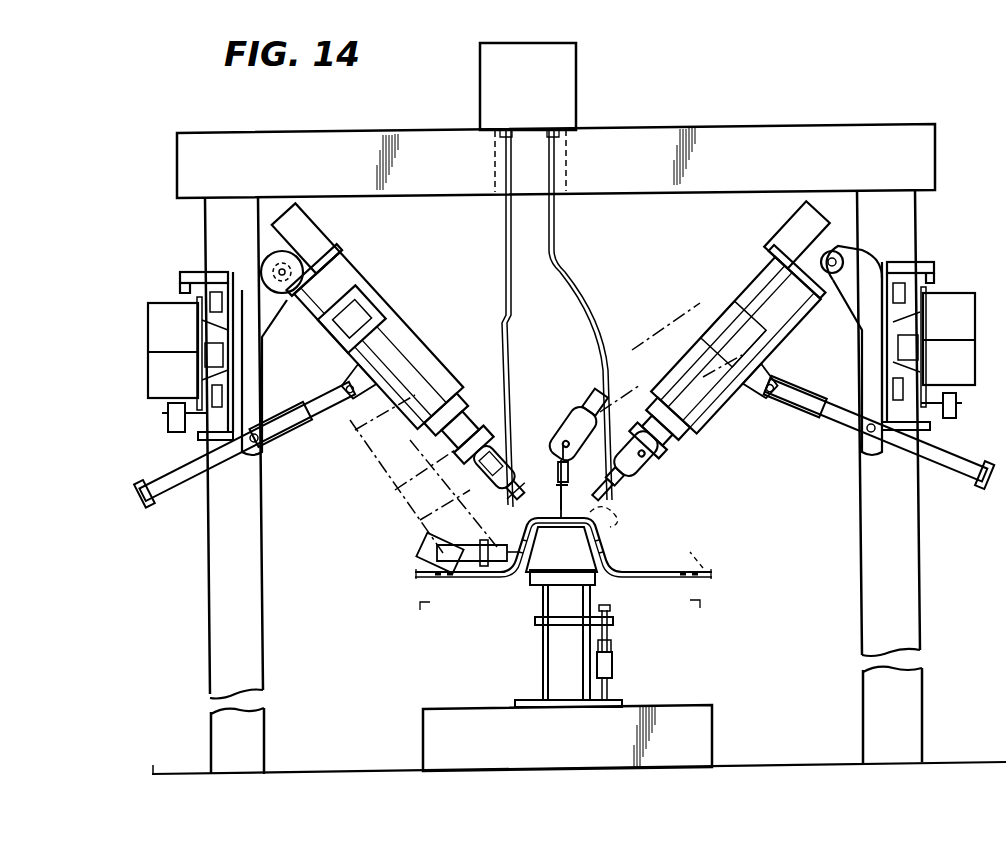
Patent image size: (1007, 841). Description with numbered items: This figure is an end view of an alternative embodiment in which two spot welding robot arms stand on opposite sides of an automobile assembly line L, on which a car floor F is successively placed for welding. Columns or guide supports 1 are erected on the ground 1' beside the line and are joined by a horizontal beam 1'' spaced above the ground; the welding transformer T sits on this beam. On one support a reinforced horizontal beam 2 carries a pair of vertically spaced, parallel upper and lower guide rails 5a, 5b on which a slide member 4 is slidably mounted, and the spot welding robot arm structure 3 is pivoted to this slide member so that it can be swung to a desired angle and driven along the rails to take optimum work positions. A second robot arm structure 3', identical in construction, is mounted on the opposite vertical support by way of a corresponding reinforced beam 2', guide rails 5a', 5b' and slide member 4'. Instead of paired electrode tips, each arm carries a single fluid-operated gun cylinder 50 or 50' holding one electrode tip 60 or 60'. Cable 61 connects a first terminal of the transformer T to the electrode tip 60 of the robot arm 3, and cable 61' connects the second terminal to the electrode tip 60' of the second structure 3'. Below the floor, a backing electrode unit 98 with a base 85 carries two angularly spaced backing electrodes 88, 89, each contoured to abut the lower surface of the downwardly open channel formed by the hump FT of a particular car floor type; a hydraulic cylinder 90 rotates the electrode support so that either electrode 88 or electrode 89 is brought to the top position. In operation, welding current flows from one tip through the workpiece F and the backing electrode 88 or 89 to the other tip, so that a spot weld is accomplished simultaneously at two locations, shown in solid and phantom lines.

The transformer T is at (573, 56).
The horizontal beam 1'' is at (556, 145).
The column or guide support 1 is at (565, 482).
The ground 1' is at (579, 743).
The automobile assembly line L is at (575, 212).
The cable 61' is at (484, 318).
The cable 61 is at (580, 315).
The second robot arm structure 3' is at (367, 377).
The spot welding robot arm structure 3 is at (741, 342).
The upper guide rail 5a' is at (186, 335).
The reinforced horizontal beam 2' is at (154, 343).
The lower guide rail 5b' is at (153, 402).
The slide member 4' is at (271, 372).
The slide member 4 is at (849, 350).
The upper guide rail 5a is at (942, 339).
The reinforced horizontal beam 2 is at (962, 339).
The lower guide rail 5b is at (964, 421).
The fluid-operated gun cylinder 50' is at (497, 487).
The fluid-operated gun cylinder 50 is at (630, 472).
The electrode tip 60' is at (492, 532).
The electrode tip 60 is at (599, 462).
The hump FT is at (598, 544).
The car floor F is at (697, 547).
The backing electrode unit 98 is at (520, 605).
The backing electrode 88 is at (612, 578).
The backing electrode 89 is at (590, 582).
The base 85 is at (565, 676).
The hydraulic cylinder 90 is at (614, 668).